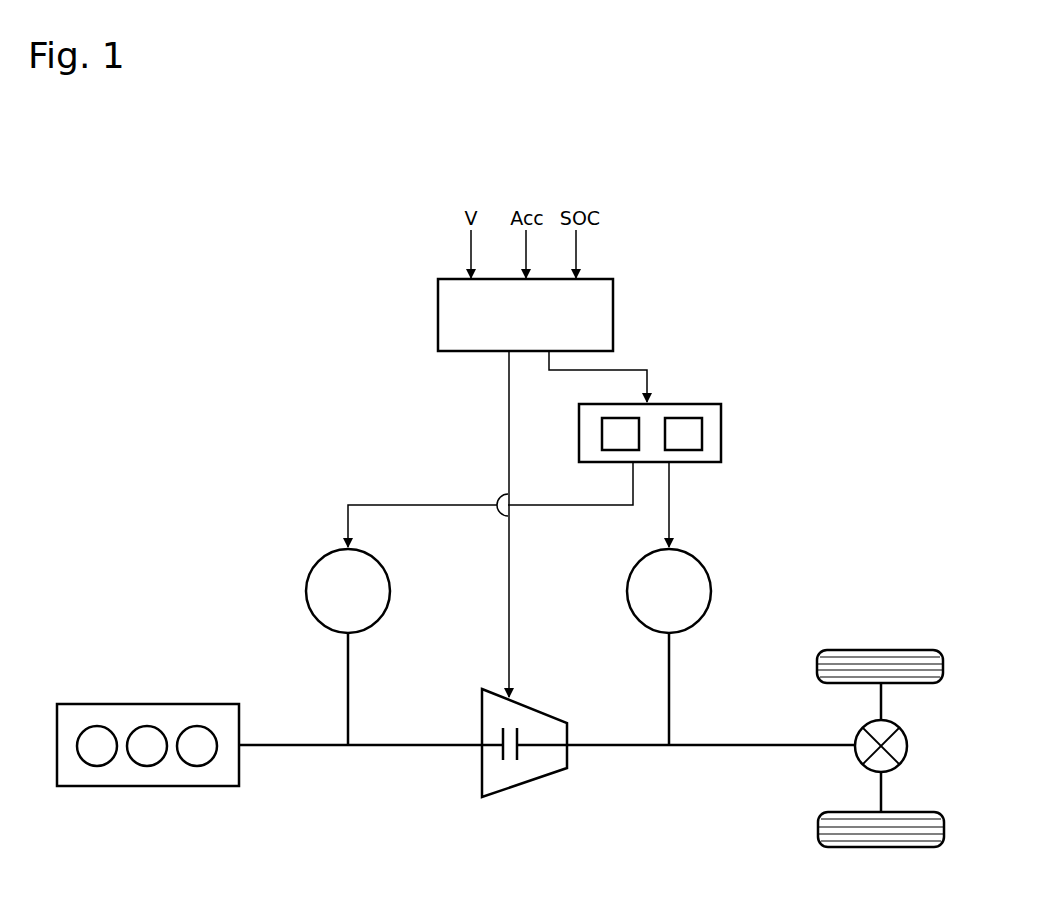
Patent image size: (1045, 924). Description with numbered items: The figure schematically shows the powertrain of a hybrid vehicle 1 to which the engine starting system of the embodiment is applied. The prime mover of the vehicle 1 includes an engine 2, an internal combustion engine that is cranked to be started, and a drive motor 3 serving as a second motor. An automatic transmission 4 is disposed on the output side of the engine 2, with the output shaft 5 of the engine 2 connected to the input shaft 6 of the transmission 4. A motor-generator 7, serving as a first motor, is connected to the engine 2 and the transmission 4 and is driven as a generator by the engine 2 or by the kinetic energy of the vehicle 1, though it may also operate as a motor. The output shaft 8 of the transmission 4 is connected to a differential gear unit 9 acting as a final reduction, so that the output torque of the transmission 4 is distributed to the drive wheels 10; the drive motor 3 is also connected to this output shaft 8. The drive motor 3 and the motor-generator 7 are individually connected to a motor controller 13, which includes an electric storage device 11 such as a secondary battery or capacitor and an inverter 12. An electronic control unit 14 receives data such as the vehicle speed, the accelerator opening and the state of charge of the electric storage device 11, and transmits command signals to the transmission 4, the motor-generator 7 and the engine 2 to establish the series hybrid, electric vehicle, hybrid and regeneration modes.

The hybrid vehicle 1 is at (206, 487).
The engine 2 is at (155, 703).
The drive motor 3 is at (711, 578).
The automatic transmission 4 is at (553, 775).
The output shaft 5 is at (291, 748).
The input shaft 6 is at (455, 748).
The motor-generator 7 is at (314, 564).
The output shaft 8 is at (655, 749).
The differential gear unit 9 is at (907, 745).
The drive wheels 10 is at (883, 649).
The electric storage device 11 is at (601, 435).
The inverter 12 is at (703, 432).
The motor controller 13 is at (697, 403).
The electronic control unit 14 is at (613, 305).